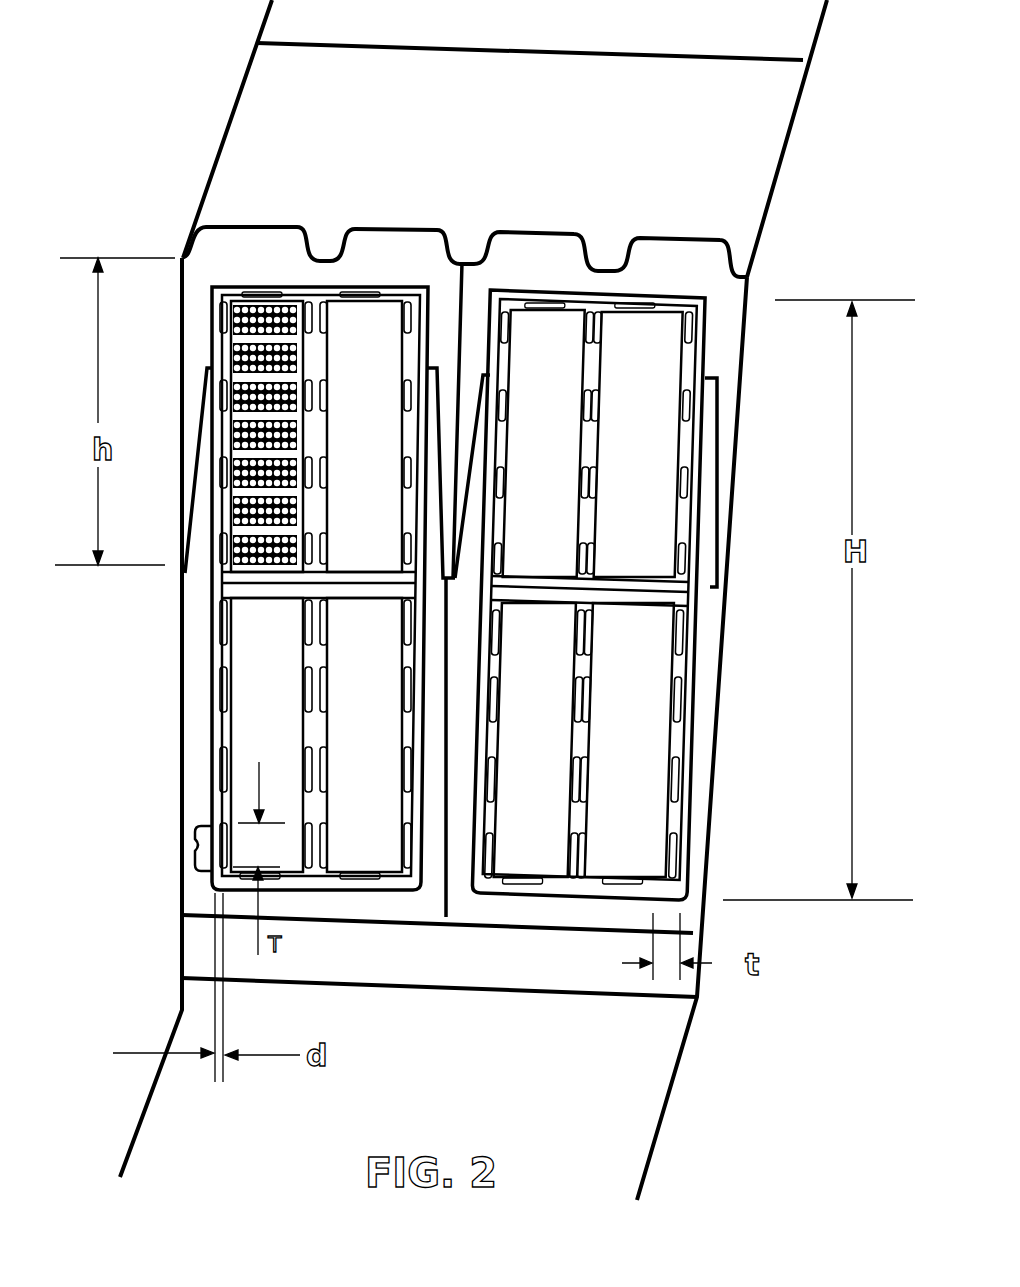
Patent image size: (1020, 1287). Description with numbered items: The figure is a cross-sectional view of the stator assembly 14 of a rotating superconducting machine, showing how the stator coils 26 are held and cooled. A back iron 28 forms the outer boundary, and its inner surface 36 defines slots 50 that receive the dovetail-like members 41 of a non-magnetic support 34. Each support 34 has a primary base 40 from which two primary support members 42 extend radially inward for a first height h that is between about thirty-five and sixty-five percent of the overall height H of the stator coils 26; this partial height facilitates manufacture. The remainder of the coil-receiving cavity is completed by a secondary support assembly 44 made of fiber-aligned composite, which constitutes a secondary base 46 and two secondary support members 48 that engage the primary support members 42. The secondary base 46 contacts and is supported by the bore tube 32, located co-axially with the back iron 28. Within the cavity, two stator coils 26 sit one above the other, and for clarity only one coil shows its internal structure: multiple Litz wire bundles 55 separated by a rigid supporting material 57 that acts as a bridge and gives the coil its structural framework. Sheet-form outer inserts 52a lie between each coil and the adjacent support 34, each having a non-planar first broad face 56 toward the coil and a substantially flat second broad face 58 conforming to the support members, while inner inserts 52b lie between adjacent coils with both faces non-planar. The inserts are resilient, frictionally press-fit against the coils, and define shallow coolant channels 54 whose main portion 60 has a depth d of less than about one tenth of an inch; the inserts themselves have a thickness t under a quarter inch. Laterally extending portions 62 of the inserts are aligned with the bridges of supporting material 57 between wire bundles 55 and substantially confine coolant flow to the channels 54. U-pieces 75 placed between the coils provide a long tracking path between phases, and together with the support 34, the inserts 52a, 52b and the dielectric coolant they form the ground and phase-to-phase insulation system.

The stator assembly 14 is at (165, 96).
The stator coil 26 is at (225, 735).
The back iron 28 is at (347, 161).
The bore tube 32 is at (389, 962).
The non-magnetic support 34 is at (748, 500).
The inner surface 36 is at (688, 245).
The primary base 40 is at (181, 280).
The dovetail-like member 41 is at (270, 261).
The primary support member 42 is at (180, 425).
The secondary support assembly 44 is at (728, 766).
The secondary base 46 is at (600, 931).
The secondary support member 48 is at (723, 680).
The slot 50 is at (378, 224).
The outer insert 52a is at (625, 617).
The inner insert 52b is at (575, 897).
The coolant channel 54 is at (667, 858).
The Litz wire bundle 55 is at (268, 302).
The first broad face 56 is at (665, 752).
The supporting material 57 is at (242, 490).
The second broad face 58 is at (693, 710).
The main portion 60 is at (195, 845).
The laterally extending portion 62 is at (682, 820).
The U-piece 75 is at (232, 578).